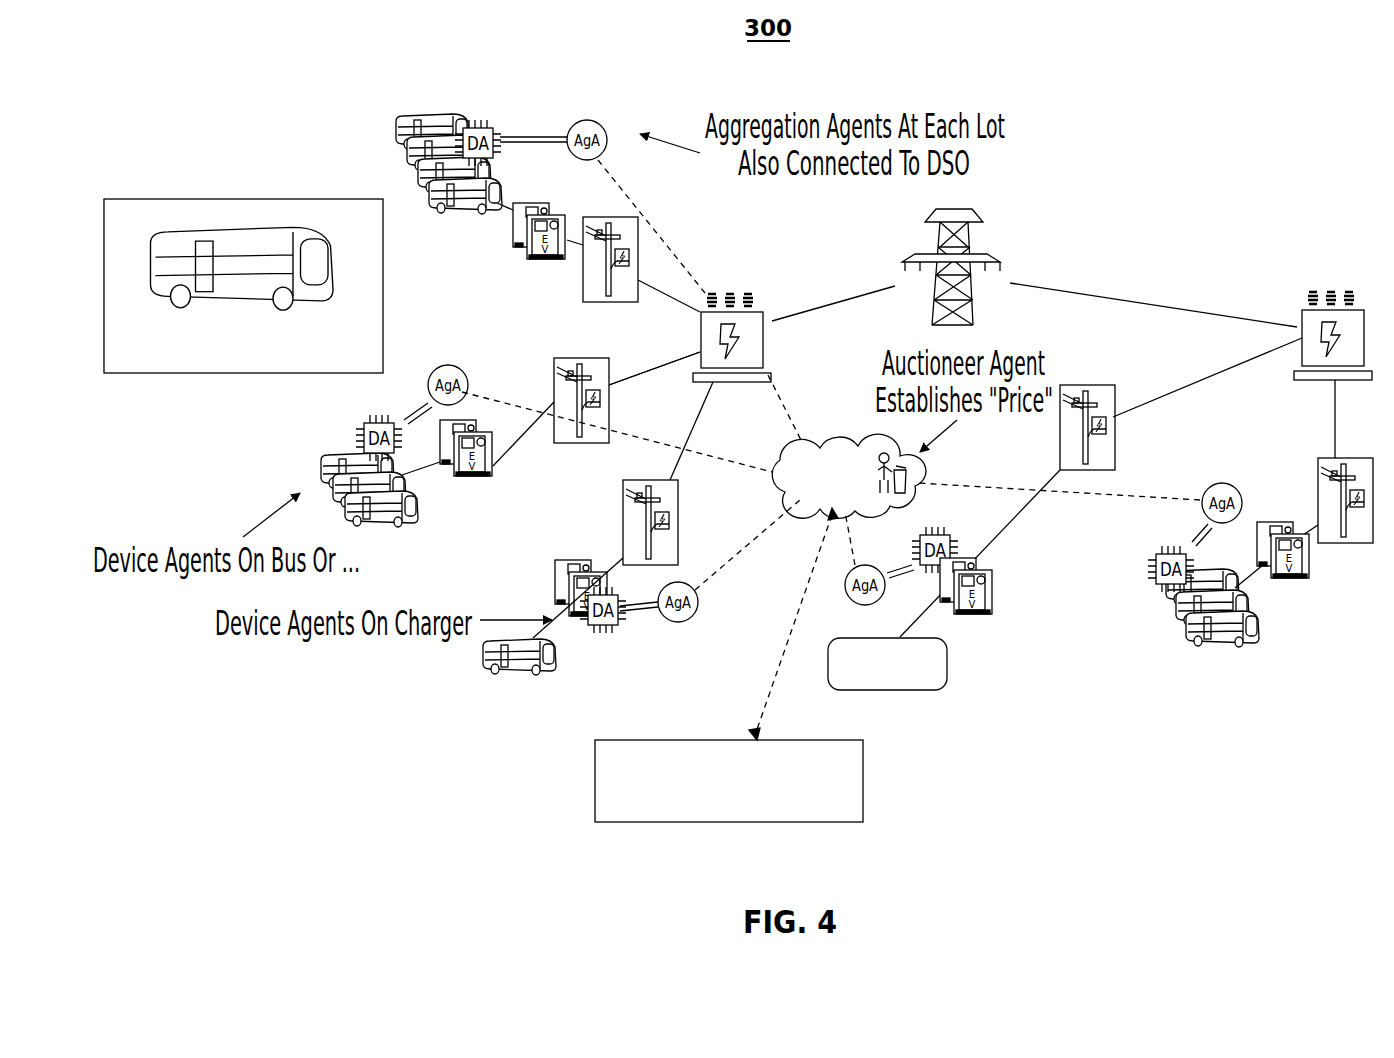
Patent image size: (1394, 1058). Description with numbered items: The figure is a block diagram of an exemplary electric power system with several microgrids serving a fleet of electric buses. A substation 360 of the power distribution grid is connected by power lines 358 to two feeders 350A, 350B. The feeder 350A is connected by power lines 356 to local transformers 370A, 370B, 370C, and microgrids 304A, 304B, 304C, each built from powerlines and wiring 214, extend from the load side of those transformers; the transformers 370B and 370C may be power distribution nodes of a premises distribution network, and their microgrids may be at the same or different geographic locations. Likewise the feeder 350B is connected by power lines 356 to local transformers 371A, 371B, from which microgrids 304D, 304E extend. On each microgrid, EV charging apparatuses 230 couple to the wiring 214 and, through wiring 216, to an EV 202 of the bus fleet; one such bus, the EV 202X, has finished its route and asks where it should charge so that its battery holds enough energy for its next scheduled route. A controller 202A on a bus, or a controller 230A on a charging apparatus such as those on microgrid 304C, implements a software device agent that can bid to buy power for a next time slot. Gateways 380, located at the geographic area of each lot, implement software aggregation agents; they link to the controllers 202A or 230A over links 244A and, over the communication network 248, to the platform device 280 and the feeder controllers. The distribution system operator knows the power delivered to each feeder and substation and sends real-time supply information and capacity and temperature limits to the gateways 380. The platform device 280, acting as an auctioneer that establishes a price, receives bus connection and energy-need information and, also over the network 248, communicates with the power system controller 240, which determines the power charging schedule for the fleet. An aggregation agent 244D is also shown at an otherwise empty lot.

The EV 202X is at (218, 226).
The EV 202 is at (322, 466).
The controller 202A is at (373, 414).
The wiring 214 is at (504, 456).
The wiring 216 is at (402, 478).
The EV charging apparatus 230 is at (522, 212).
The controller 230A is at (617, 630).
The power system controller 240 is at (865, 765).
The links 244A is at (532, 138).
The aggregation agent at empty lot 244D is at (905, 572).
The communication network 248 is at (635, 175).
The platform device 280 is at (786, 450).
The microgrid 304A is at (478, 222).
The microgrid 304B is at (505, 466).
The microgrid 304C is at (570, 642).
The microgrid 304D is at (1016, 520).
The microgrid 304E is at (1280, 590).
The feeder 350A is at (762, 310).
The feeder 350B is at (1304, 312).
The power lines 356 is at (622, 390).
The power lines 358 is at (836, 300).
The substation 360 is at (978, 253).
The local transformer 370A is at (605, 302).
The local transformer 370B is at (553, 373).
The local transformer 370C is at (678, 535).
The local transformer 371A is at (1106, 385).
The local transformer 371B is at (1320, 462).
The gateway 380 is at (598, 121).